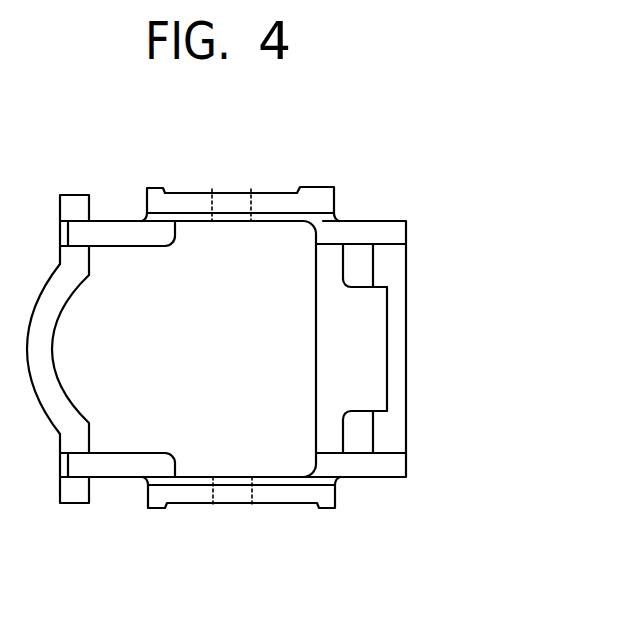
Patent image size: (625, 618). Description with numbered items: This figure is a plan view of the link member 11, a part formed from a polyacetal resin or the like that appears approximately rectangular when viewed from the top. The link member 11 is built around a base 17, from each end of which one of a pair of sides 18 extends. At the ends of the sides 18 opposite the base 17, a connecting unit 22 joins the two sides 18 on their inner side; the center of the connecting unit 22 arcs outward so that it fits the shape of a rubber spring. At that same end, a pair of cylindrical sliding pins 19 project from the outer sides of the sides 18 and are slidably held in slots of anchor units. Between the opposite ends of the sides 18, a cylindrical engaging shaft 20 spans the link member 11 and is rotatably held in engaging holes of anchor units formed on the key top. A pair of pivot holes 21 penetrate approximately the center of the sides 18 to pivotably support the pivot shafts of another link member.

The link member 11 is at (471, 300).
The base 17 is at (327, 345).
The sides 18 is at (360, 231).
The cylindrical sliding pins 19 is at (75, 203).
The cylindrical engaging shaft 20 is at (397, 357).
The pivot holes 21 is at (223, 207).
The connecting unit 22 is at (42, 353).